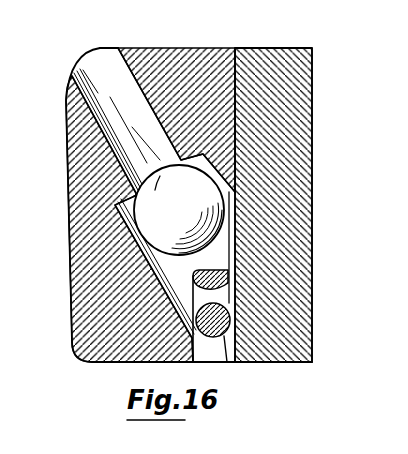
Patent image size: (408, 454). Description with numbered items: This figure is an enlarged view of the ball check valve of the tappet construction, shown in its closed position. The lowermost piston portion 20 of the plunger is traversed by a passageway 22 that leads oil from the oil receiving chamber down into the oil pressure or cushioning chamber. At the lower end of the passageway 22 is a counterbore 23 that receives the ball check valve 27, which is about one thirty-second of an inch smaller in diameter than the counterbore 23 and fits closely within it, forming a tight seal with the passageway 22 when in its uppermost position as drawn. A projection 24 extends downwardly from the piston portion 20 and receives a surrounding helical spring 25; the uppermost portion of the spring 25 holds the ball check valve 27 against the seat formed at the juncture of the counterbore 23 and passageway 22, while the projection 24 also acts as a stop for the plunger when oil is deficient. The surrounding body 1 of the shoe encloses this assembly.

The valve body 1 is at (303, 97).
The piston portion 20 is at (85, 292).
The passageway 22 is at (130, 106).
The counterbore 23 is at (207, 157).
The ball check valve 27 is at (150, 207).
The projection 24 is at (197, 363).
The helical spring 25 is at (227, 363).